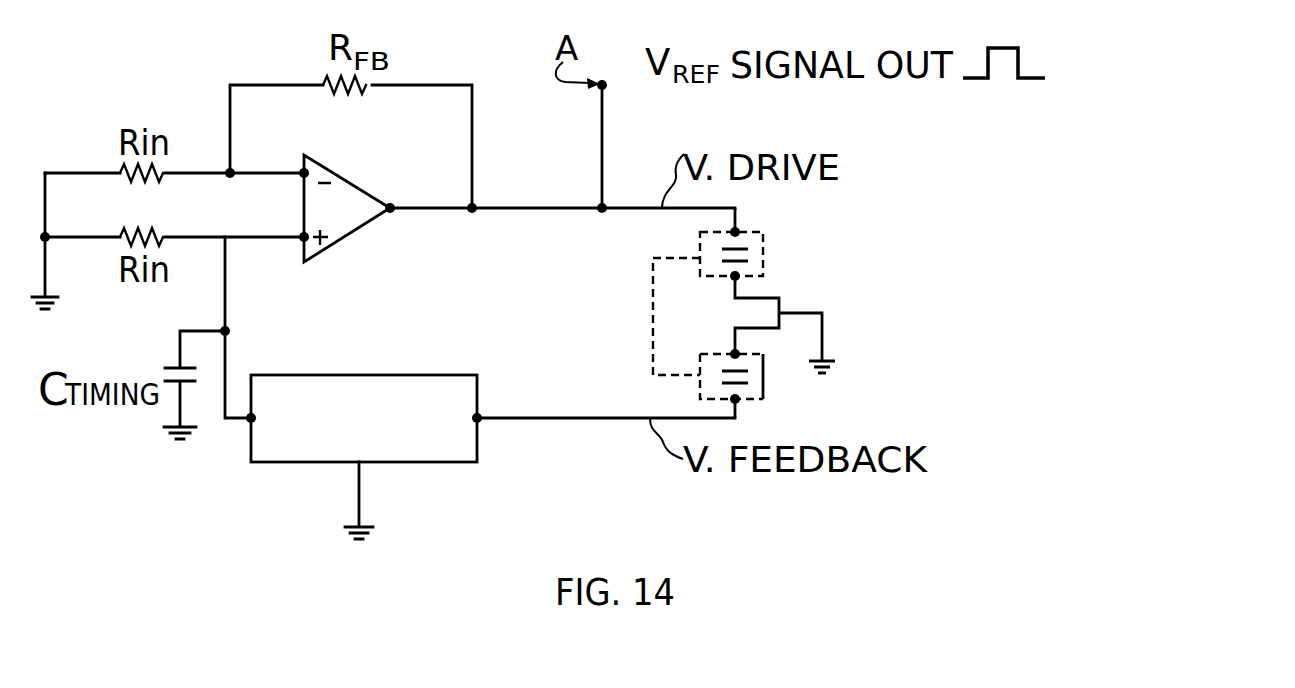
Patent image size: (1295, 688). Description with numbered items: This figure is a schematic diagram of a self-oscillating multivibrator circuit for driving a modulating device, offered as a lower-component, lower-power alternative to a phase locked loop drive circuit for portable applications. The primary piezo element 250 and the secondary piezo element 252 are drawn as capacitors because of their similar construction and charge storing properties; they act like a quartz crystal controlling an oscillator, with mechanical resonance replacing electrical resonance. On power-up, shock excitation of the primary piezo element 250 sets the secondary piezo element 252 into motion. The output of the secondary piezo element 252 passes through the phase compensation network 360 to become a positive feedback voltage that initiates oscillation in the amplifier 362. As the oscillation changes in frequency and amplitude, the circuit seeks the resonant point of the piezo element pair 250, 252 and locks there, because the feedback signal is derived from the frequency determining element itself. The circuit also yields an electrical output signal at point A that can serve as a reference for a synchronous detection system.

The primary piezo element 250 is at (750, 261).
The secondary piezo element 252 is at (750, 392).
The phase compensation network 360 is at (270, 462).
The amplifier 362 is at (348, 237).